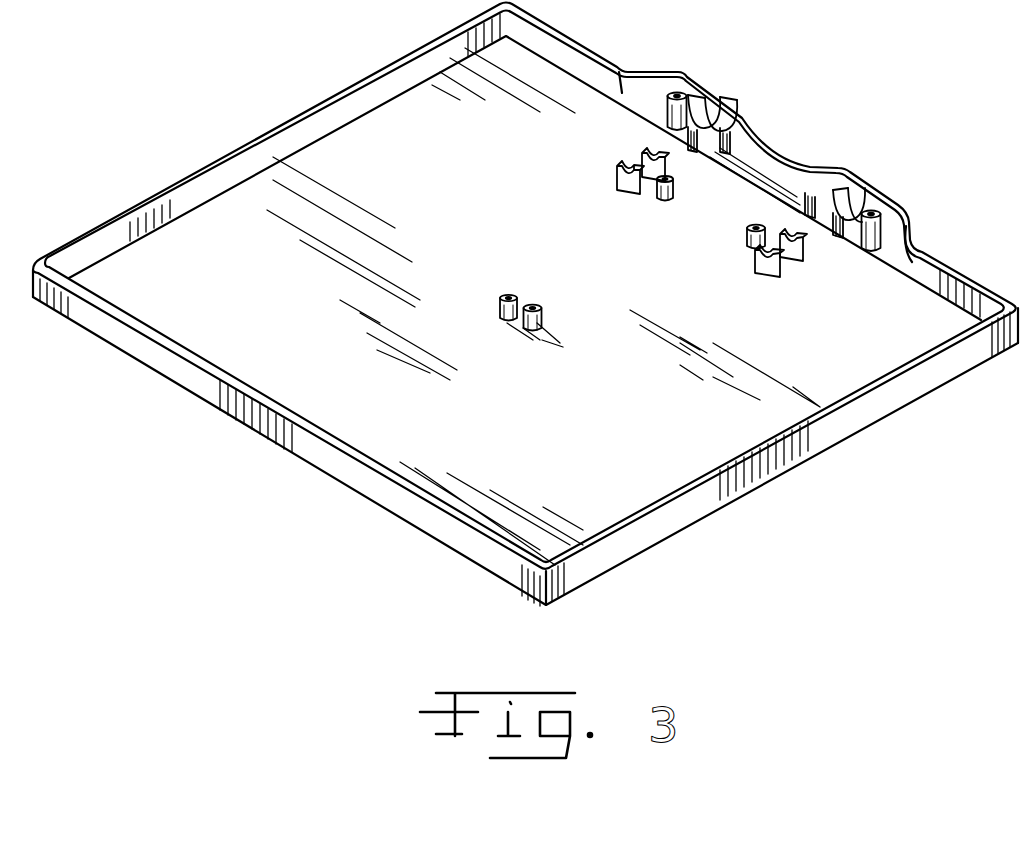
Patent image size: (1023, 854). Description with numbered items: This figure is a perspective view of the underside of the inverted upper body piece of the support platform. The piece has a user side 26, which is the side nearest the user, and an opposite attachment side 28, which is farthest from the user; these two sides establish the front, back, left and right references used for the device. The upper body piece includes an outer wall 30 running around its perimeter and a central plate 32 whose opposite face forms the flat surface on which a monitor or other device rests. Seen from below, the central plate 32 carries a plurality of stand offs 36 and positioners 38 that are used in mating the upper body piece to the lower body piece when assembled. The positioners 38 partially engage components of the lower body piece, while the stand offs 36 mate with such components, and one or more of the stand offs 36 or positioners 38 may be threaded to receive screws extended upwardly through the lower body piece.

The user side 26 is at (238, 481).
The attachment side 28 is at (866, 122).
The outer wall 30 is at (218, 160).
The central plate 32 is at (322, 338).
The stand offs 36 is at (668, 97).
The positioners 38 is at (748, 118).